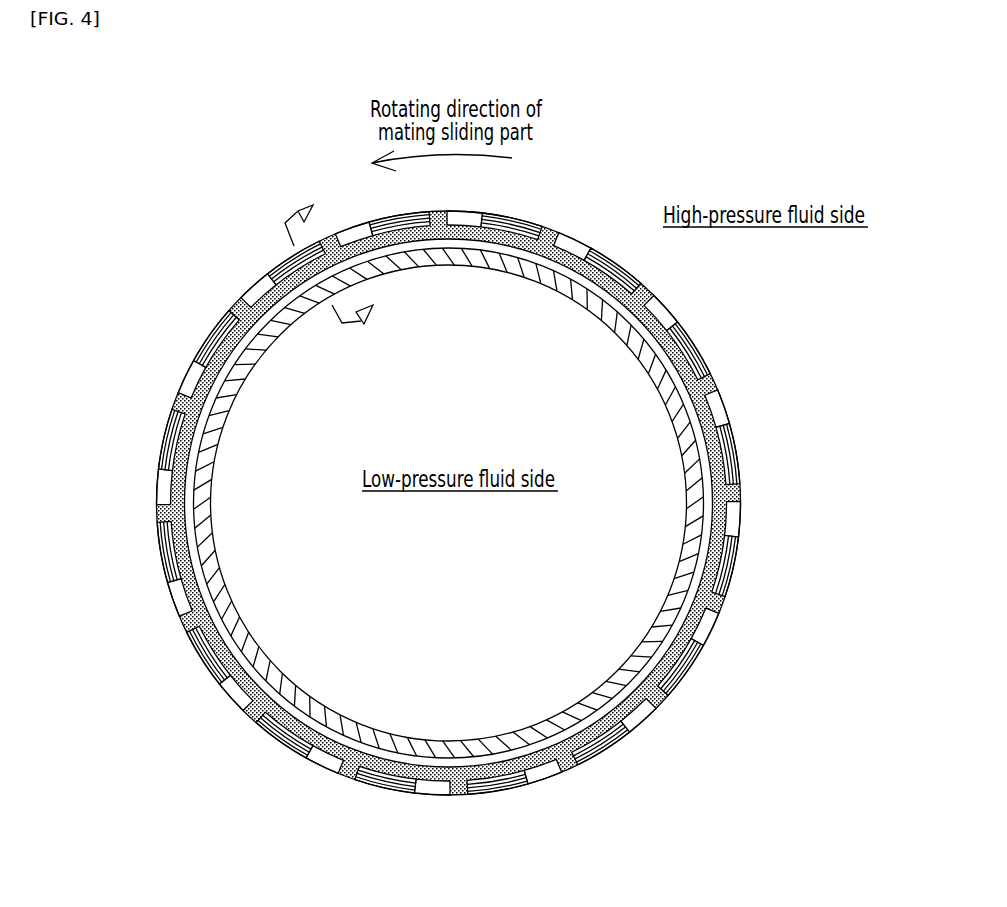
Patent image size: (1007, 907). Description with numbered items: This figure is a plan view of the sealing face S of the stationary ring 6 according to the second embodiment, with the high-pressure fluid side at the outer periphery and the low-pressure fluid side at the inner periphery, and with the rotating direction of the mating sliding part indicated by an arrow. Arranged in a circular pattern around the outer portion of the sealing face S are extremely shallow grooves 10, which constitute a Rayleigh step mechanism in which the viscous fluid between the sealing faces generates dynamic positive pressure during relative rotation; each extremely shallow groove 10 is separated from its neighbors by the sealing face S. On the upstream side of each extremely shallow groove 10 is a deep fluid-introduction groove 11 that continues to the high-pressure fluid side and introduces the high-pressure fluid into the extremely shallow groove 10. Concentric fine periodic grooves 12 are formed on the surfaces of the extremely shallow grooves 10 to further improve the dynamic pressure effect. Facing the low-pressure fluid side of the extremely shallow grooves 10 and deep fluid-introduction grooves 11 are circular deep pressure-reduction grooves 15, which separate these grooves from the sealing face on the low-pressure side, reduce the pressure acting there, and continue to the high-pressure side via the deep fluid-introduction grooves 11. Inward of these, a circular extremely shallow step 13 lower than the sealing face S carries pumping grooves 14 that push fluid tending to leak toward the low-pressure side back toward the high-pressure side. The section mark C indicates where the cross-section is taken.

The stationary ring 6 is at (539, 227).
The extremely shallow grooves 10 is at (210, 333).
The deep fluid-introduction grooves 11 is at (228, 303).
The fine periodic grooves 12 is at (197, 353).
The extremely shallow step 13 is at (435, 265).
The pumping grooves 14 is at (490, 266).
The deep pressure-reduction grooves 15 is at (292, 318).
The sealing face S is at (665, 318).
The section line C is at (321, 271).